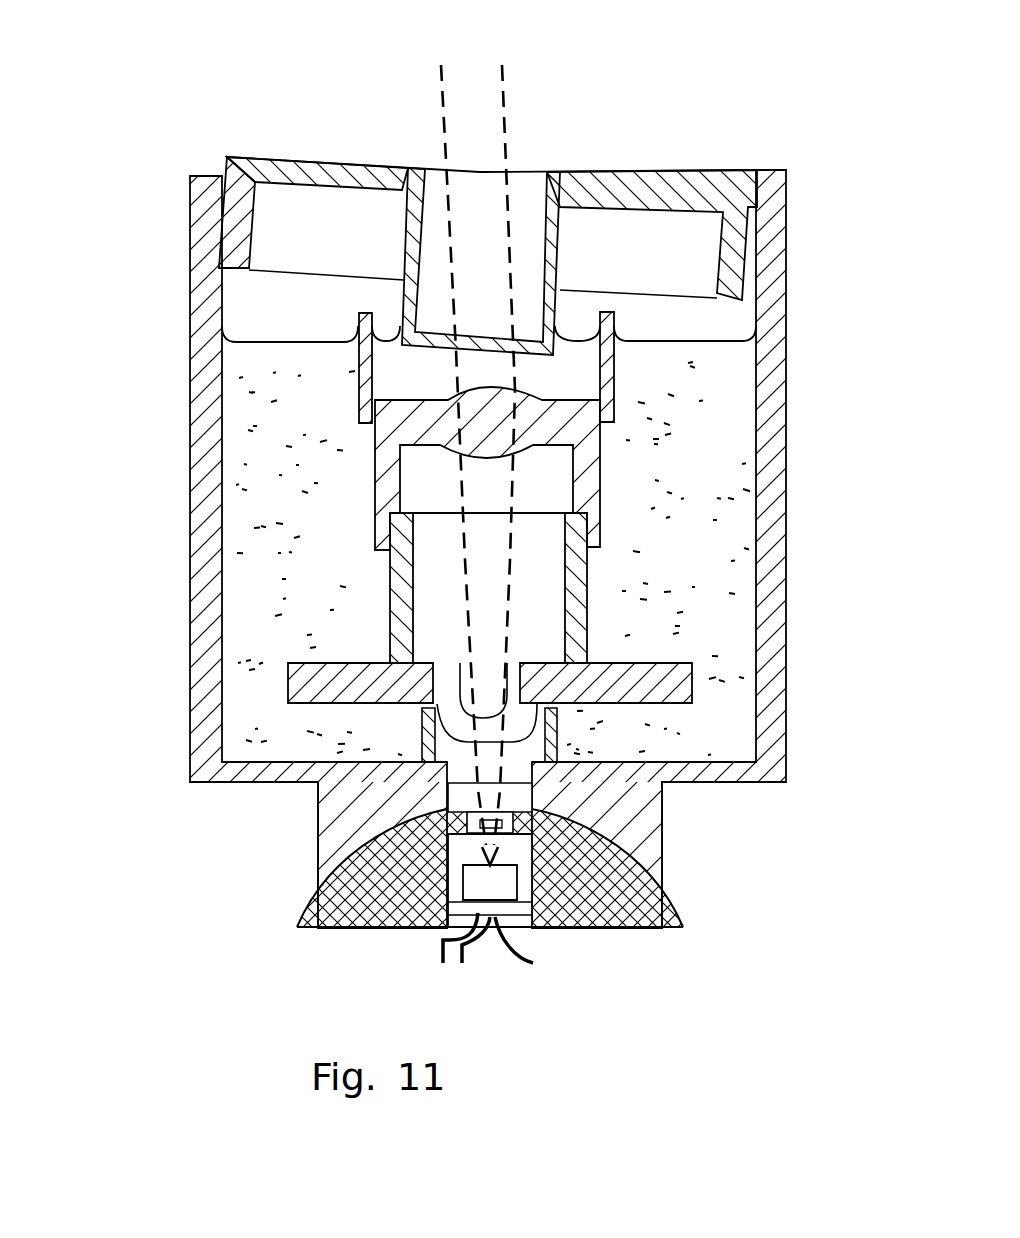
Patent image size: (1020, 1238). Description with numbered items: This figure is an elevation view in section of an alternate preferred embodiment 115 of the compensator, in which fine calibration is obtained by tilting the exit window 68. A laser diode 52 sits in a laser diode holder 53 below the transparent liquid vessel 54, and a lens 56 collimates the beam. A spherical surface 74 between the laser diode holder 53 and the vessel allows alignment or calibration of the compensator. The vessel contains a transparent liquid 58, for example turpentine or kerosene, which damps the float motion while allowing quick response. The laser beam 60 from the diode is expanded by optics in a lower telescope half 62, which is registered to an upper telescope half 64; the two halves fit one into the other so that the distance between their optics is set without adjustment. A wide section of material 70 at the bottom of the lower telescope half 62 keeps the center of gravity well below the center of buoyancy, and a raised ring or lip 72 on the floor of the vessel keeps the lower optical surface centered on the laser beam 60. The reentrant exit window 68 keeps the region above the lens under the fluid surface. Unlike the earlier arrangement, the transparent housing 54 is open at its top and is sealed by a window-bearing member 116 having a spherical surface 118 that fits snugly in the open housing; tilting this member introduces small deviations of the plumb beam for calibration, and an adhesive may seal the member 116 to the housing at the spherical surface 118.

The laser diode 52 is at (500, 935).
The laser diode holder 53 is at (640, 927).
The transparent liquid vessel 54 is at (523, 502).
The lens 56 is at (395, 822).
The liquid 58 is at (693, 728).
The laser beam 60 is at (512, 580).
The lower telescope half 62 is at (570, 507).
The upper telescope half 64 is at (603, 437).
The exit window 68 is at (480, 337).
The wide section of material 70 is at (290, 663).
The raised ring or lip 72 is at (420, 737).
The spherical surface 74 is at (306, 912).
The alternate preferred embodiment 115 is at (403, 122).
The window-bearing member 116 is at (652, 183).
The spherical surface 118 is at (222, 178).